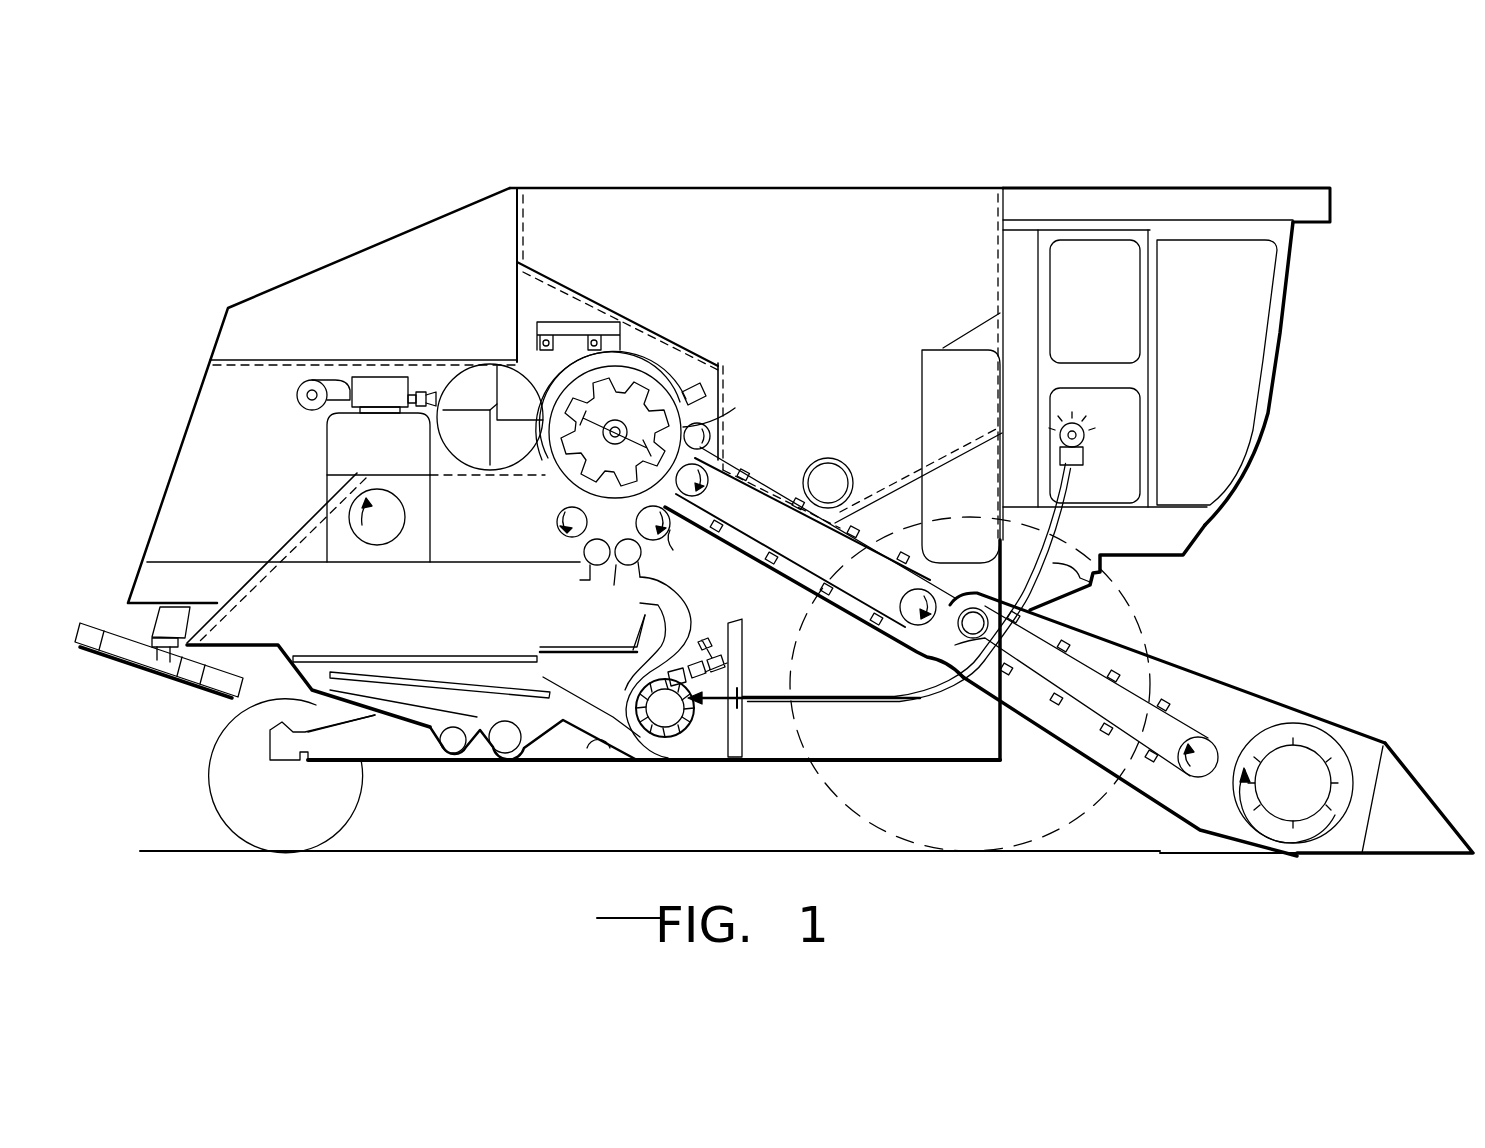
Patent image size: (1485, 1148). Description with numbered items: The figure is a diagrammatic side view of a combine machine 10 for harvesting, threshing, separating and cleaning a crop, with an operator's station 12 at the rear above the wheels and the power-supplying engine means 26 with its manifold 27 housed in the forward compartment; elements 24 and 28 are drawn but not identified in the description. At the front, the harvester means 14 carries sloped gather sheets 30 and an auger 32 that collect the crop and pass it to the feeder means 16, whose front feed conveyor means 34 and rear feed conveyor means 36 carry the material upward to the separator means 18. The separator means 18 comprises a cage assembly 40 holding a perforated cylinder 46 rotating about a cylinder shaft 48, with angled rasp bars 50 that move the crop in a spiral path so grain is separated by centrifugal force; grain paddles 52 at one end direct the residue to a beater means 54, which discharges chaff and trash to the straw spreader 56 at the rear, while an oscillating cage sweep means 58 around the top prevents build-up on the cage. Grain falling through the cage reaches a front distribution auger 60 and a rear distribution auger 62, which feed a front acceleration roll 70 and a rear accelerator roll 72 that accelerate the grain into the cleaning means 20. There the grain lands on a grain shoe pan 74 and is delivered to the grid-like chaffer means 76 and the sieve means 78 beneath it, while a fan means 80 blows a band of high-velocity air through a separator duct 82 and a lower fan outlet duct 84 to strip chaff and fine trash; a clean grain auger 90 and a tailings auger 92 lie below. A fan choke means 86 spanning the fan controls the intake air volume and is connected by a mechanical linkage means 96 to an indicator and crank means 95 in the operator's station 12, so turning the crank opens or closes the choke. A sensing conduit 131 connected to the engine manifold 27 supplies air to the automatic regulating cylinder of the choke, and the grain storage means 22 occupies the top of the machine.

The combine machine 10 is at (993, 162).
The operator's station 12 is at (1295, 328).
The harvester means 14 is at (1220, 676).
The feeder means 16 is at (905, 665).
The separator means 18 is at (735, 440).
The cleaning means 20 is at (698, 584).
The grain storage means 22 is at (738, 185).
The front compartment 24 is at (222, 466).
The engine means 26 is at (327, 434).
The manifold 27 is at (358, 377).
The pump 28 is at (302, 392).
The sloped gather sheets 30 is at (1408, 770).
The auger 32 is at (1298, 742).
The front feed conveyor means 34 is at (1148, 676).
The rear feed conveyor means 36 is at (843, 597).
The cage assembly 40 is at (692, 348).
The perforated cylinder 46 is at (690, 397).
The cylinder shaft 48 is at (615, 432).
The rasp bars 50 is at (736, 410).
The grain paddles 52 is at (615, 445).
The beater means 54 is at (488, 366).
The straw spreader 56 is at (128, 680).
The cage sweep means 58 is at (633, 352).
The front distribution auger 60 is at (693, 556).
The rear distribution auger 62 is at (556, 520).
The front acceleration roll 70 is at (628, 567).
The rear accelerator roll 72 is at (590, 583).
The grain shoe pan 74 is at (598, 645).
The chaffer means 76 is at (452, 655).
The sieve means 78 is at (373, 674).
The fan means 80 is at (665, 752).
The separator duct 82 is at (690, 612).
The lower fan outlet duct 84 is at (592, 752).
The fan choke means 86 is at (637, 663).
The clean grain auger 90 is at (505, 754).
The tailings auger 92 is at (452, 755).
The indicator and crank means 95 is at (1085, 452).
The mechanical linkage means 96 is at (1097, 580).
The sensing conduit 131 is at (422, 392).